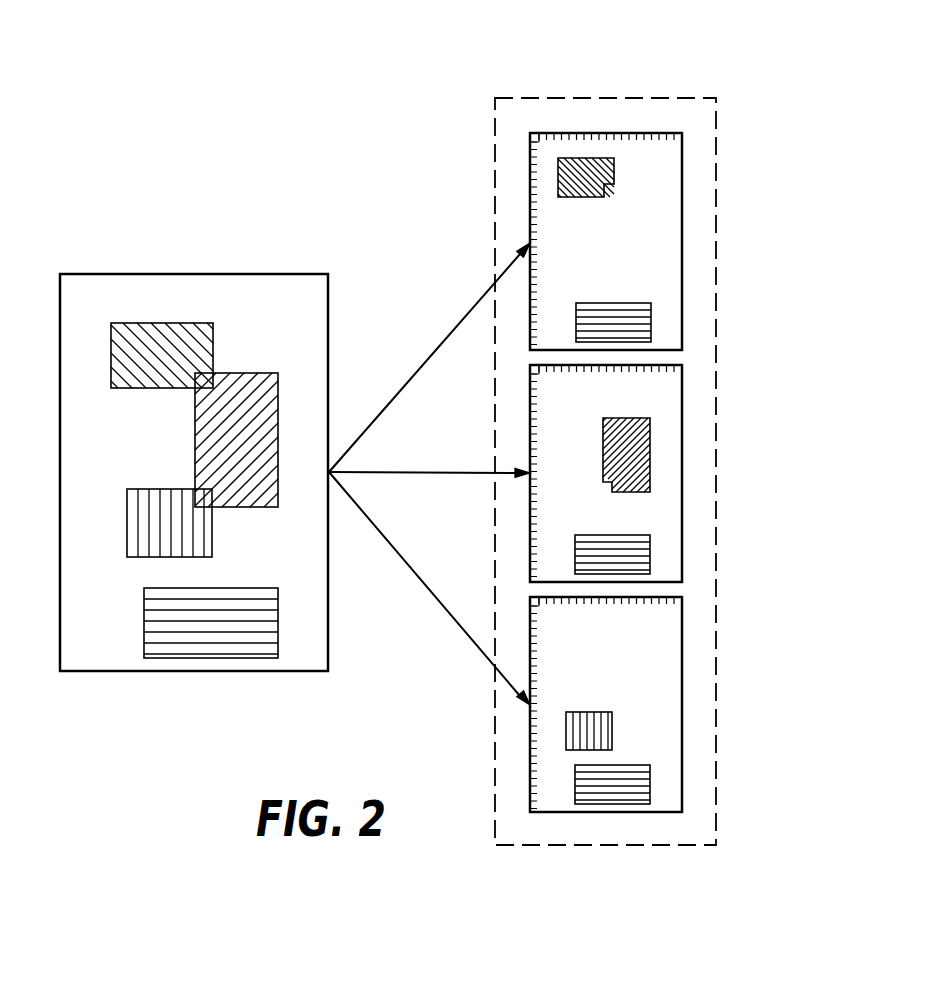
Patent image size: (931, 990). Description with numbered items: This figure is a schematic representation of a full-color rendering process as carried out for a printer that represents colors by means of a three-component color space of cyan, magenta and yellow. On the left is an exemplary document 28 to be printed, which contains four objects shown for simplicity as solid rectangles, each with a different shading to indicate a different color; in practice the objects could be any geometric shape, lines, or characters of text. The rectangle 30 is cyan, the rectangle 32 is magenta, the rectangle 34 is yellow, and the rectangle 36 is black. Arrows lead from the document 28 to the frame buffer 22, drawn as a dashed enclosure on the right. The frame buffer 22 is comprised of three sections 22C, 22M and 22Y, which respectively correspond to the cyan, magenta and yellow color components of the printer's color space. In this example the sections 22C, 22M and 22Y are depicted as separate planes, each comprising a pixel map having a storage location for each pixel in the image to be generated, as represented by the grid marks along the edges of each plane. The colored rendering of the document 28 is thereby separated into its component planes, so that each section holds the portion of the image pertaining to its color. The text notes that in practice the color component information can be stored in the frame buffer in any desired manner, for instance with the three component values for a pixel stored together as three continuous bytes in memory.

The frame buffer 22 is at (533, 97).
The cyan section of frame buffer 22C is at (670, 209).
The magenta section of frame buffer 22M is at (670, 450).
The yellow section of frame buffer 22Y is at (668, 693).
The document 28 is at (219, 293).
The rectangle 30 is at (162, 340).
The rectangle 32 is at (245, 397).
The rectangle 34 is at (158, 505).
The rectangle 36 is at (235, 600).